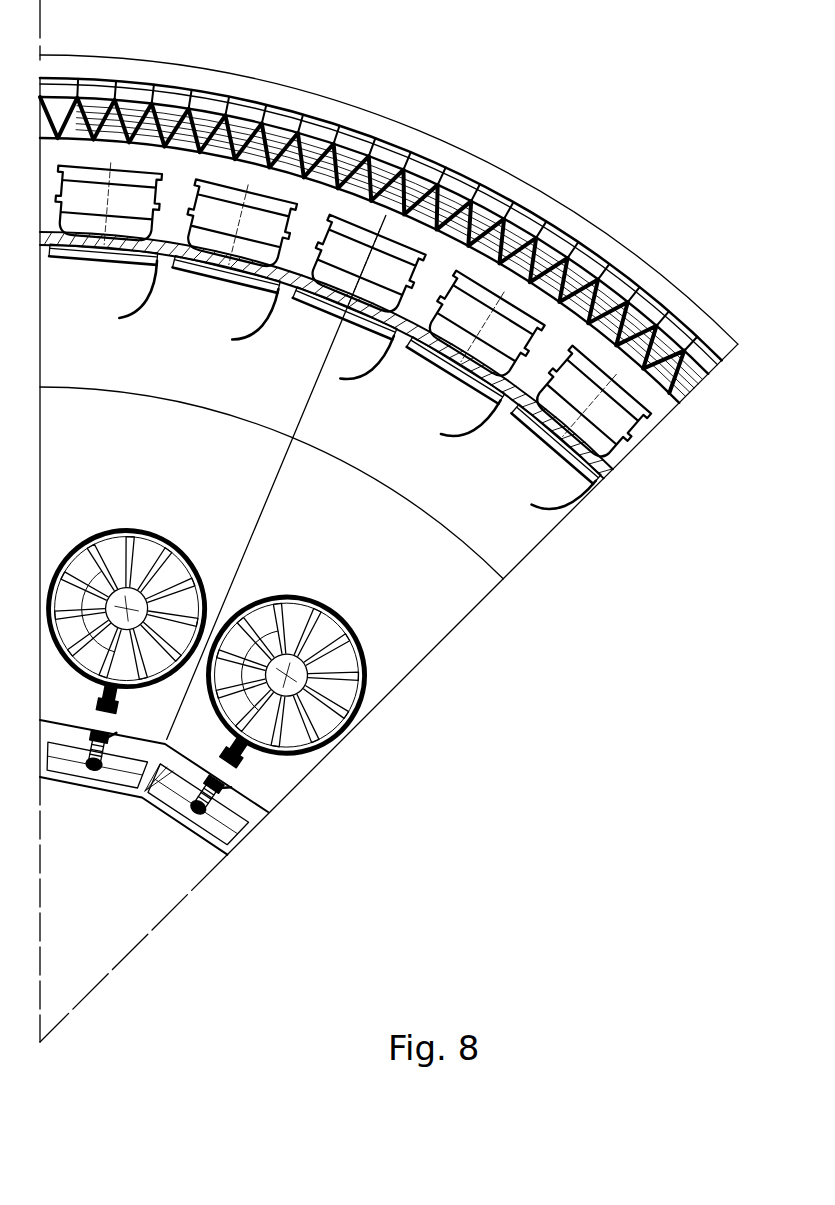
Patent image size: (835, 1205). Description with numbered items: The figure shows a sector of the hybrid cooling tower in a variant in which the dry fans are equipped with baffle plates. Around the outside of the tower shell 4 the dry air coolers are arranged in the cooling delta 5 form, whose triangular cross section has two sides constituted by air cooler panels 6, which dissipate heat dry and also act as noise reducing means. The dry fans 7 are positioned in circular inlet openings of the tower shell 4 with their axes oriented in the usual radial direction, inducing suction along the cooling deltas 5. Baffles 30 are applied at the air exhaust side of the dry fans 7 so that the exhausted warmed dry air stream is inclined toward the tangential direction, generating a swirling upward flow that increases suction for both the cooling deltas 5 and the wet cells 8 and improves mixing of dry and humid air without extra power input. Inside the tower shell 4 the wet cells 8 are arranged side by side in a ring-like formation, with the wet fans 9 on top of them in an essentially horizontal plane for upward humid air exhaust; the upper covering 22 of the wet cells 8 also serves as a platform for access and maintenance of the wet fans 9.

The tower shell 4 is at (160, 262).
The cooling delta 5 is at (685, 305).
The air cooler panel 6 is at (566, 232).
The dry fan 7 is at (628, 446).
The wet cell 8 is at (415, 625).
The wet fan 9 is at (322, 750).
The upper covering 22 is at (359, 569).
The baffle 30 is at (450, 432).